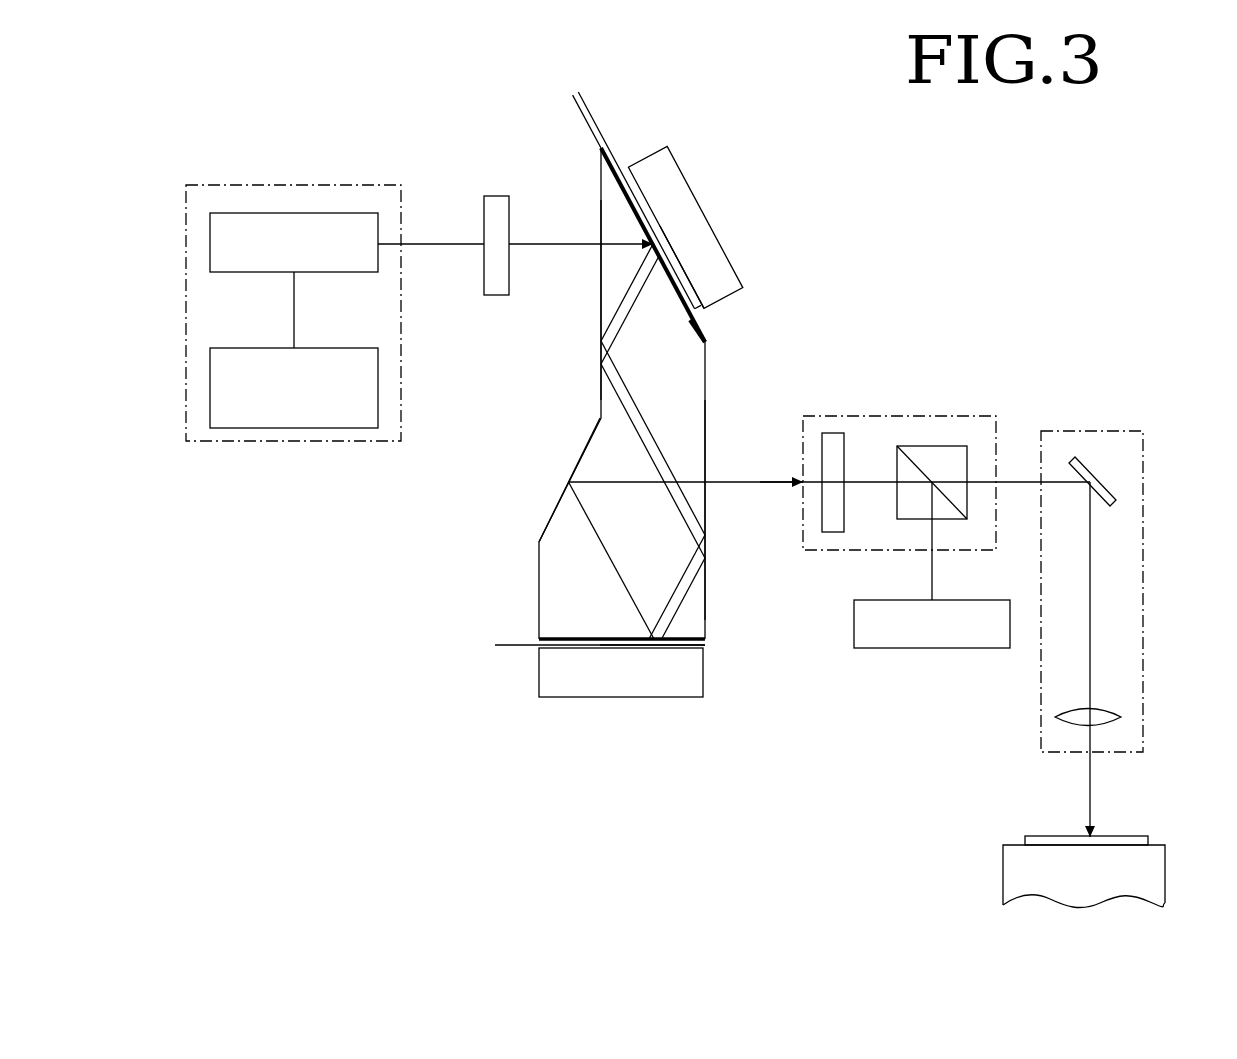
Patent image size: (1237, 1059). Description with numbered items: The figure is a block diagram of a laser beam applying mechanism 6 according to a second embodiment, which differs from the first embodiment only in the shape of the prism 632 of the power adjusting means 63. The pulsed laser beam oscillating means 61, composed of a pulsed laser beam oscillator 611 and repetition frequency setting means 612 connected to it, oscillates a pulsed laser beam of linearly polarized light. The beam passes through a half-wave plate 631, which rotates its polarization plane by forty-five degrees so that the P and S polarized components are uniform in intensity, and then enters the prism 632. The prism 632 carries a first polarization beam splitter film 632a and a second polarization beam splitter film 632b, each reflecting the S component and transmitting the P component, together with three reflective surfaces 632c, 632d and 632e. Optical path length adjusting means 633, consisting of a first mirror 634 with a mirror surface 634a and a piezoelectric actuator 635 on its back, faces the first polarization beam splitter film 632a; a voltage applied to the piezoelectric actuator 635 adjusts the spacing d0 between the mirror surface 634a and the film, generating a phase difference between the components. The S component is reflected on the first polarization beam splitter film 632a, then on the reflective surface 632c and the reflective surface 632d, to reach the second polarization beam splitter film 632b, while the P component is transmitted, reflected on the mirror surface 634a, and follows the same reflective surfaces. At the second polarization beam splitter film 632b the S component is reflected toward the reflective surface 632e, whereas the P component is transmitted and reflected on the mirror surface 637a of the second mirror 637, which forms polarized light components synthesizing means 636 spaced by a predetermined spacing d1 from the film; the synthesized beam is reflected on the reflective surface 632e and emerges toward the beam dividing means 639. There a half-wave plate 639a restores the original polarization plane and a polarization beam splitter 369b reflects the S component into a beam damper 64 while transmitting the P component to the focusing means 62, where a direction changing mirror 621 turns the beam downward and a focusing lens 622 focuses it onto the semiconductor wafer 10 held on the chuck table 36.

The laser beam applying mechanism 6 is at (928, 226).
The pulsed laser beam oscillating means 61 is at (212, 181).
The pulsed laser beam oscillator 611 is at (283, 213).
The repetition frequency setting means 612 is at (290, 428).
The power adjusting means 63 is at (527, 437).
The half-wave plate 631 is at (496, 196).
The prism 632 is at (537, 554).
The first polarization beam splitter film 632a is at (627, 188).
The second polarization beam splitter film 632b is at (563, 638).
The reflective surface 632c is at (600, 318).
The reflective surface 632d is at (707, 598).
The reflective surface 632e is at (566, 486).
The optical path length adjusting means 633 is at (700, 194).
The first mirror 634 is at (703, 312).
The mirror surface 634a is at (700, 320).
The piezoelectric actuator 635 is at (718, 250).
The polarized light components synthesizing means 636 is at (595, 712).
The second mirror 637 is at (653, 688).
The mirror surface 637a is at (705, 648).
The beam dividing means 639 is at (902, 415).
The half-wave plate 639a is at (835, 434).
The polarization beam splitter 369b is at (952, 447).
The beam damper 64 is at (936, 655).
The focusing means 62 is at (1103, 429).
The direction changing mirror 621 is at (1103, 482).
The focusing lens 622 is at (1104, 711).
The semiconductor wafer 10 is at (1048, 836).
The chuck table 36 is at (1155, 880).
The spacing d0 is at (572, 131).
The spacing d1 is at (500, 618).